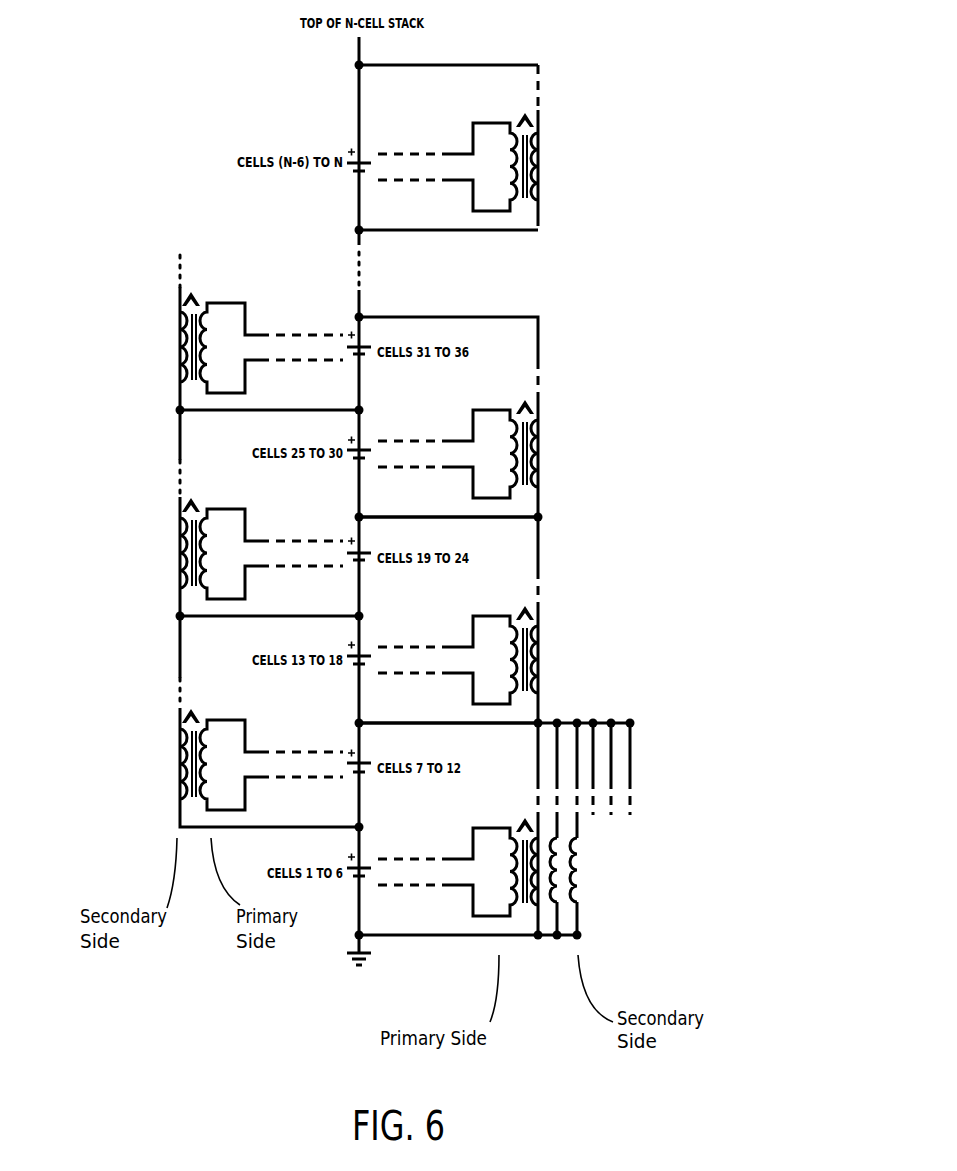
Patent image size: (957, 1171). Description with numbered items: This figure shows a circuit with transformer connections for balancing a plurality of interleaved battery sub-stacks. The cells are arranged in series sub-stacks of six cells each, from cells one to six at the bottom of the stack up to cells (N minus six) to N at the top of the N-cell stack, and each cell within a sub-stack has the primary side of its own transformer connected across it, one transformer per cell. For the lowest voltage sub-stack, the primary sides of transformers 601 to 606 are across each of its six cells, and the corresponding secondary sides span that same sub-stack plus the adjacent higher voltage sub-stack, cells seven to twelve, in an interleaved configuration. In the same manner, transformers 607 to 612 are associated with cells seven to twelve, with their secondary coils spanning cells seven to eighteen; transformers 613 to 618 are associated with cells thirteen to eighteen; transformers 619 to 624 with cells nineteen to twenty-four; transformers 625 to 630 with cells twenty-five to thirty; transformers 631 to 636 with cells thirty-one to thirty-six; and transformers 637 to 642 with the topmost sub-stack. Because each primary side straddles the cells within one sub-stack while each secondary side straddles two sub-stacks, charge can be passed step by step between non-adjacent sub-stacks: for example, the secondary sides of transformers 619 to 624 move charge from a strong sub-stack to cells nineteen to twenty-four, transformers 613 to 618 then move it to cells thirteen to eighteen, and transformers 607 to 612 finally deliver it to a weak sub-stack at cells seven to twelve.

The transformer 601 is at (576, 837).
The transformer 606 is at (587, 853).
The transformer 607 is at (205, 743).
The transformer 612 is at (178, 765).
The transformer 613 is at (504, 620).
The transformer 618 is at (541, 653).
The transformer 619 is at (203, 532).
The transformer 624 is at (178, 559).
The transformer 625 is at (498, 417).
The transformer 630 is at (541, 451).
The transformer 631 is at (200, 326).
The transformer 636 is at (178, 353).
The transformer 637 is at (506, 147).
The transformer 642 is at (540, 165).